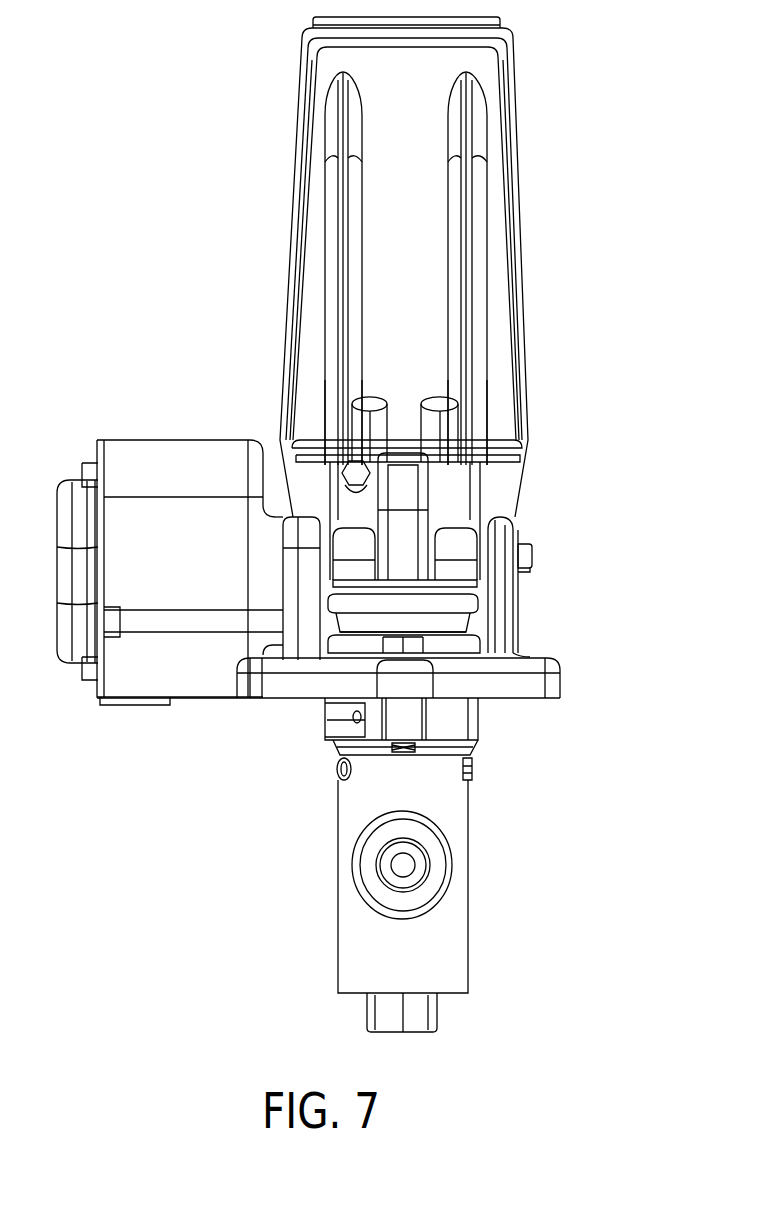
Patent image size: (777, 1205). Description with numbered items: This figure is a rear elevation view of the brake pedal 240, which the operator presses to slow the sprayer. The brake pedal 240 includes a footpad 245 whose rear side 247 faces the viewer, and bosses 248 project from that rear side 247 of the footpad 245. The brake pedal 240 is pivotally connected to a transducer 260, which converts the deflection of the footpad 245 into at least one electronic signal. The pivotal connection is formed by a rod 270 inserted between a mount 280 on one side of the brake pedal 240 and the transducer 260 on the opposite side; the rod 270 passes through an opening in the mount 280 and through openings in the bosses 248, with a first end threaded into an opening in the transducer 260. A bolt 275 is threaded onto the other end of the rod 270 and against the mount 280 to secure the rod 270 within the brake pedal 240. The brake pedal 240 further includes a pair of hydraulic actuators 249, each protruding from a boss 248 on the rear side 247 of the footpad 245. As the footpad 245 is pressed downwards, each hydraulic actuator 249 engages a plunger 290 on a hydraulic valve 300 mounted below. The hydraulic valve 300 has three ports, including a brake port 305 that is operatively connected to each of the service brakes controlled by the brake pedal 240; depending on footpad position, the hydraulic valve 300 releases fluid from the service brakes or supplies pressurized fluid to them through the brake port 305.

The brake pedal 240 is at (158, 193).
The footpad 245 is at (512, 63).
The rear side 247 is at (422, 256).
The bosses 248 is at (335, 375).
The hydraulic actuators 249 is at (352, 542).
The transducer 260 is at (152, 438).
The rod 270 is at (532, 555).
The bolt 275 is at (522, 545).
The mount 280 is at (505, 608).
The plunger 290 is at (450, 640).
The hydraulic valve 300 is at (485, 954).
The brake port 305 is at (375, 870).